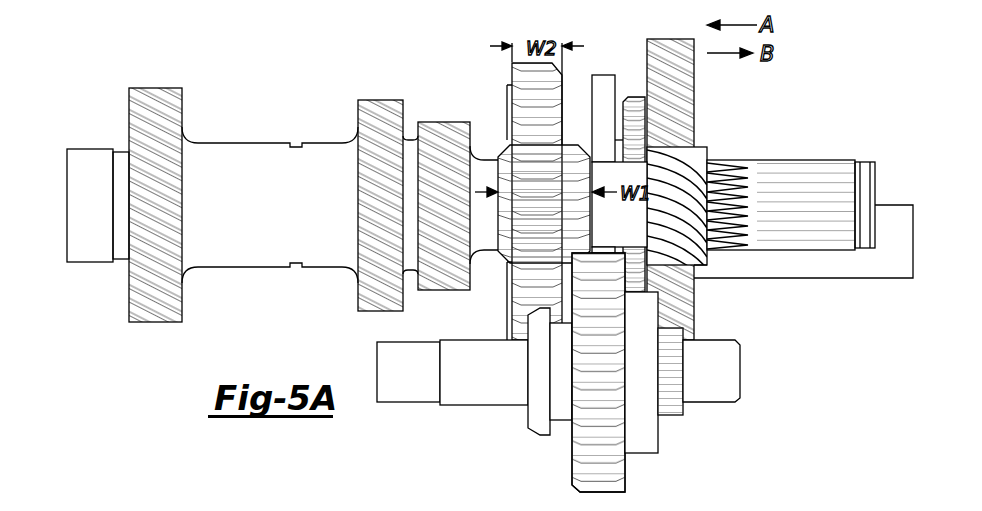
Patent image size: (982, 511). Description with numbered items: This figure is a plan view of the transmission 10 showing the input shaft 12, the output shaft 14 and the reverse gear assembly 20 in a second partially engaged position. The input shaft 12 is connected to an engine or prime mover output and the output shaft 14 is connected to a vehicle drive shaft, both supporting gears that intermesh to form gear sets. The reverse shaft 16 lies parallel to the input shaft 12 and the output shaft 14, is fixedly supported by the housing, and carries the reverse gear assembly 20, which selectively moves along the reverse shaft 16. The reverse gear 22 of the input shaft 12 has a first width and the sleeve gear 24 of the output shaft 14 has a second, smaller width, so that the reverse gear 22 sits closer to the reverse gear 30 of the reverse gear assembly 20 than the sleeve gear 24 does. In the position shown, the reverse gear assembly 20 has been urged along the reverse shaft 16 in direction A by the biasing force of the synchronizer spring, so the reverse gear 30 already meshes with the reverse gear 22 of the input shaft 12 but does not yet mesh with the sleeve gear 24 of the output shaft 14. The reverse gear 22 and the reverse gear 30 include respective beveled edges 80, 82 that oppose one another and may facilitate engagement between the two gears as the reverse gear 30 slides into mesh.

The transmission 10 is at (490, 189).
The input shaft 12 is at (91, 161).
The output shaft 14 is at (868, 268).
The reverse shaft 16 is at (708, 393).
The reverse gear assembly 20 is at (625, 377).
The reverse gear 22 is at (528, 150).
The sleeve gear 24 is at (522, 301).
The reverse gear 30 is at (615, 476).
The beveled edge 80 is at (583, 158).
The beveled edge 82 is at (571, 447).